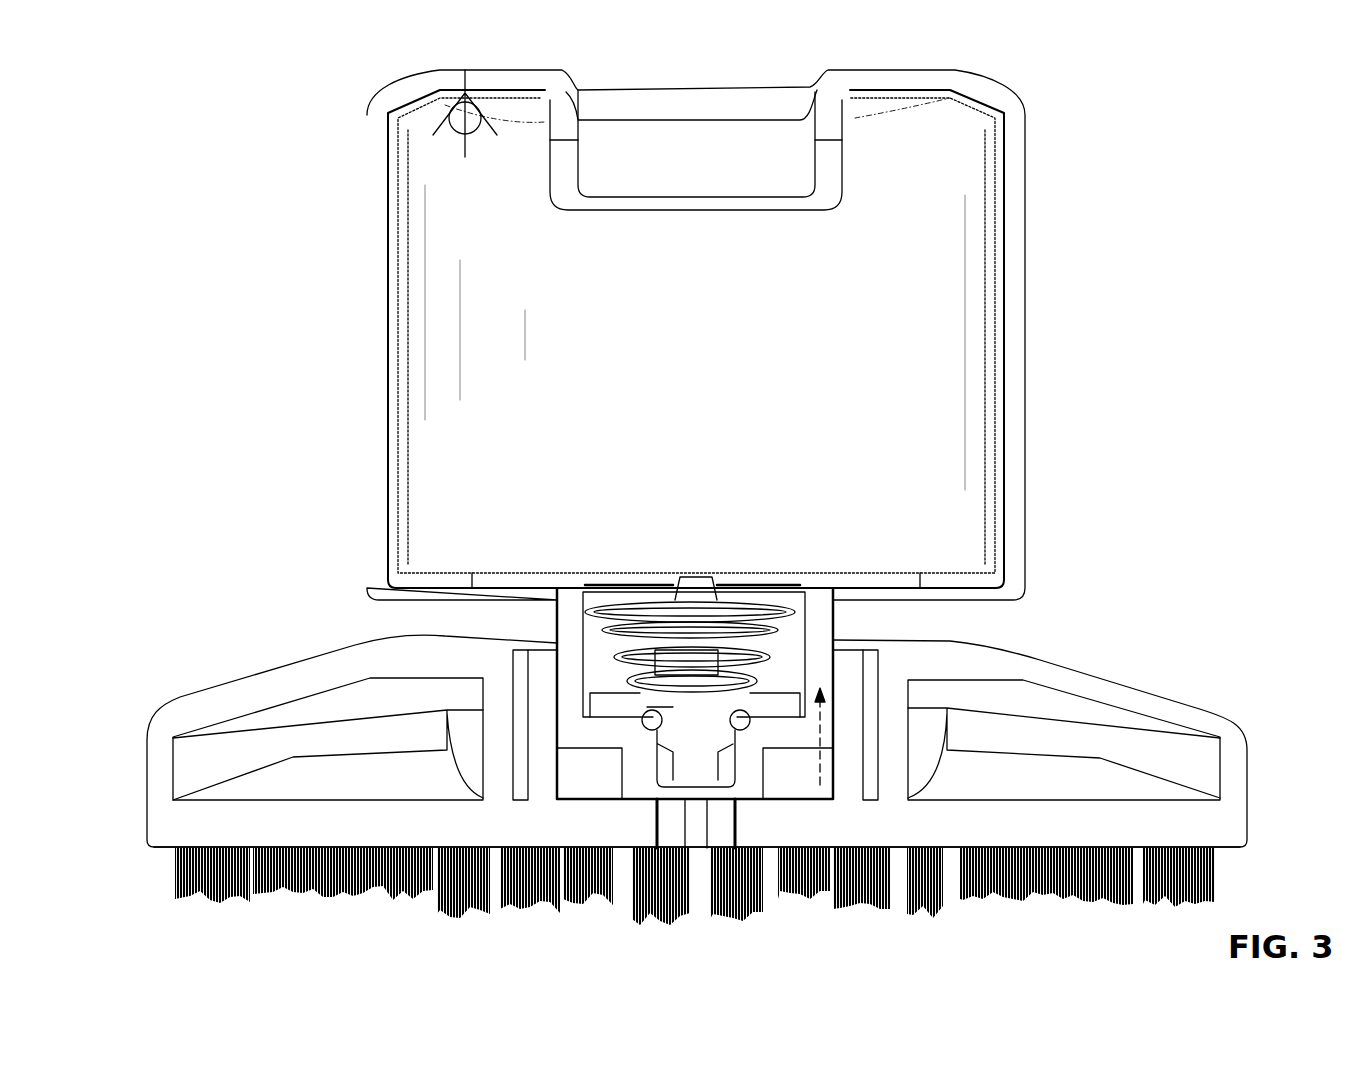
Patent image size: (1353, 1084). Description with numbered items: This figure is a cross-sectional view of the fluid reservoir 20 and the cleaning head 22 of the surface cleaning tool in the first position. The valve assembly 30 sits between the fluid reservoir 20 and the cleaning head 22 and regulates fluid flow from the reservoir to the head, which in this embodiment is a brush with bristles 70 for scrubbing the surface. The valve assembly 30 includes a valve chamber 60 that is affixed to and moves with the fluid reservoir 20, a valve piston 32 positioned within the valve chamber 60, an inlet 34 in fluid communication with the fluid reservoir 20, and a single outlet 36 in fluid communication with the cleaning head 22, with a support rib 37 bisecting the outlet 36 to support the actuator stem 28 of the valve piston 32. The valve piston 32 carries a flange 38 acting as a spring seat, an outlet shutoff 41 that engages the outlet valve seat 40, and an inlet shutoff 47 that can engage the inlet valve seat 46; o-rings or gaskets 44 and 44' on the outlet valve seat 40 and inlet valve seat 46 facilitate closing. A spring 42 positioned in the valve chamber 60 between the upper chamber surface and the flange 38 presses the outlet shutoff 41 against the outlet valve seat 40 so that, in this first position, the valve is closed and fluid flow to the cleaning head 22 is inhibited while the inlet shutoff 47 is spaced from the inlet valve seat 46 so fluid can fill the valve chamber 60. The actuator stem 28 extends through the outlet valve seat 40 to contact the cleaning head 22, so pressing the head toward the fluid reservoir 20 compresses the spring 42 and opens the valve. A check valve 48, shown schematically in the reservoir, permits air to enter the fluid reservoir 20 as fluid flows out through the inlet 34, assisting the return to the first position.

The fluid reservoir 20 is at (943, 224).
The cleaning head 22 is at (1241, 877).
The actuator stem 28 is at (560, 803).
The valve assembly 30 is at (693, 655).
The valve piston 32 is at (700, 655).
The inlet 34 is at (670, 632).
The outlet 36 is at (720, 820).
The support rib 37 is at (693, 820).
The flange 38 is at (605, 700).
The outlet valve seat 40 is at (650, 719).
The outlet shutoff 41 is at (647, 707).
The spring 42 is at (655, 592).
The o-ring or gasket 44 is at (1016, 748).
The o-ring or gasket 44' is at (958, 664).
The inlet valve seat 46 is at (737, 590).
The inlet shutoff 47 is at (692, 588).
The check valve 48 is at (500, 107).
The valve chamber 60 is at (603, 662).
The bristles 70 is at (195, 868).